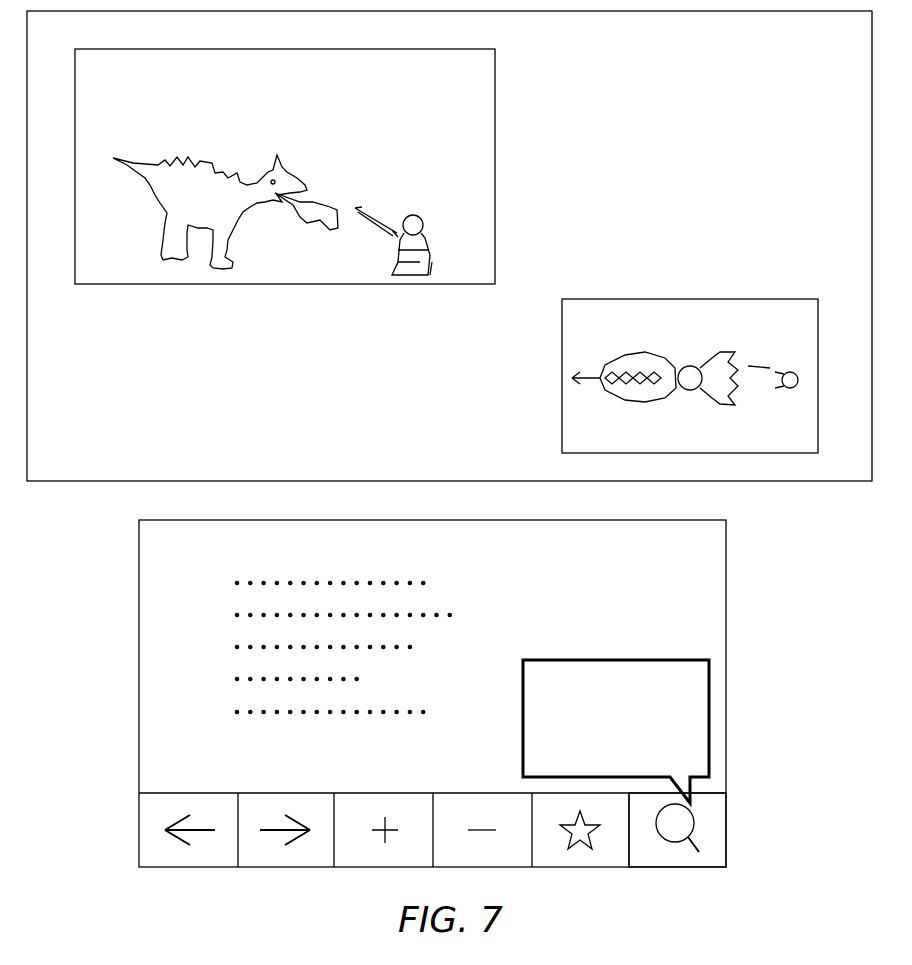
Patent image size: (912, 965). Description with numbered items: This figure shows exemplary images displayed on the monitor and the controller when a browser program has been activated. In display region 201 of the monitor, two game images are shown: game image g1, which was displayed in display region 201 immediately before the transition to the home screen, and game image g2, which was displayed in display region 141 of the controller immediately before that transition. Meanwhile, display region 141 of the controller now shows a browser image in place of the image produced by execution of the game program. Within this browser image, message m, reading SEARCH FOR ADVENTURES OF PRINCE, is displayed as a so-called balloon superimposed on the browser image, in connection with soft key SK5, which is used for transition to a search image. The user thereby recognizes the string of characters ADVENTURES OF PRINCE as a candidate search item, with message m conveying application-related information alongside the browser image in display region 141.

The display region 201 is at (826, 481).
The game image g1 is at (495, 126).
The game image g2 is at (685, 299).
The display region 141 is at (727, 753).
The message m is at (709, 662).
The soft key SK5 is at (700, 837).